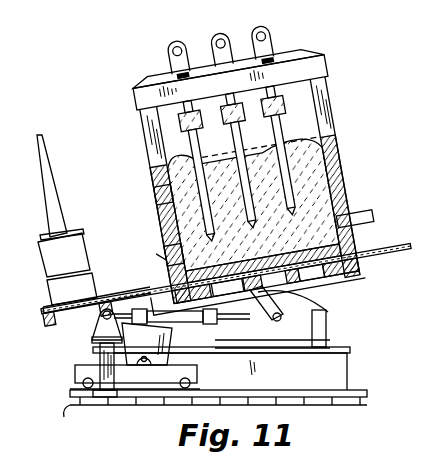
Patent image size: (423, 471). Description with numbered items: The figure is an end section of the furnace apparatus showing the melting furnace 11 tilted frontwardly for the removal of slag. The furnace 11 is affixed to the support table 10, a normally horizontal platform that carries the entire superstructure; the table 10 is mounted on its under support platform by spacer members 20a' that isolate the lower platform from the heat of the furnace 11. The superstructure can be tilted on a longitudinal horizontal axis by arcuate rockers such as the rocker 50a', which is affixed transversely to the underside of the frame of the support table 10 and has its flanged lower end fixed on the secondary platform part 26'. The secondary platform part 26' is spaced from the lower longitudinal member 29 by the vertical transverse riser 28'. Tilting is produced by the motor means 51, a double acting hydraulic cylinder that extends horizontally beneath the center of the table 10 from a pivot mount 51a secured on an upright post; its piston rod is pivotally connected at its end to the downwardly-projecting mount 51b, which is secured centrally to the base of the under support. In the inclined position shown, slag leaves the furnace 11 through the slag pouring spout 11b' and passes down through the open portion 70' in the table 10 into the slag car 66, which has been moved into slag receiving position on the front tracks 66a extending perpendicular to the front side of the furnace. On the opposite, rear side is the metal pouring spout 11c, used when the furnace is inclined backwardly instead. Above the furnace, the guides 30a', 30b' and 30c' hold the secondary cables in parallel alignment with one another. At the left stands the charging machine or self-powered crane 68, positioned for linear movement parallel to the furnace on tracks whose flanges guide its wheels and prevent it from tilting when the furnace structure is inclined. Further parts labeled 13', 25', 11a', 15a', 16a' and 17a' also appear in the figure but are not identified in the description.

The melting furnace 11 is at (338, 157).
The granular material 13' is at (226, 201).
The support table 10 is at (378, 247).
The spacer member 20a' is at (299, 277).
The arcuate rocker 50a' is at (225, 301).
The metal pouring spout 11c is at (358, 214).
The container side wall 11a' is at (149, 207).
The slag pouring spout 11b' is at (157, 252).
The lid 25' is at (251, 78).
The cable guide 30a' is at (149, 55).
The cable guide 30b' is at (203, 38).
The cable guide 30c' is at (263, 30).
The first probe 15a' is at (205, 183).
The second probe 16a' is at (252, 171).
The third probe 17a' is at (296, 161).
The charging machine 68 is at (84, 246).
The open portion 70' is at (97, 292).
The pivot mount 51a is at (97, 330).
The slag car 66 is at (80, 362).
The front tracks 66a is at (268, 389).
The motor means 51 is at (213, 323).
The downwardly-projecting mount 51b is at (311, 306).
The secondary platform part 26' is at (243, 340).
The vertical transverse riser 28' is at (257, 371).
The lower longitudinal member 29 is at (367, 402).